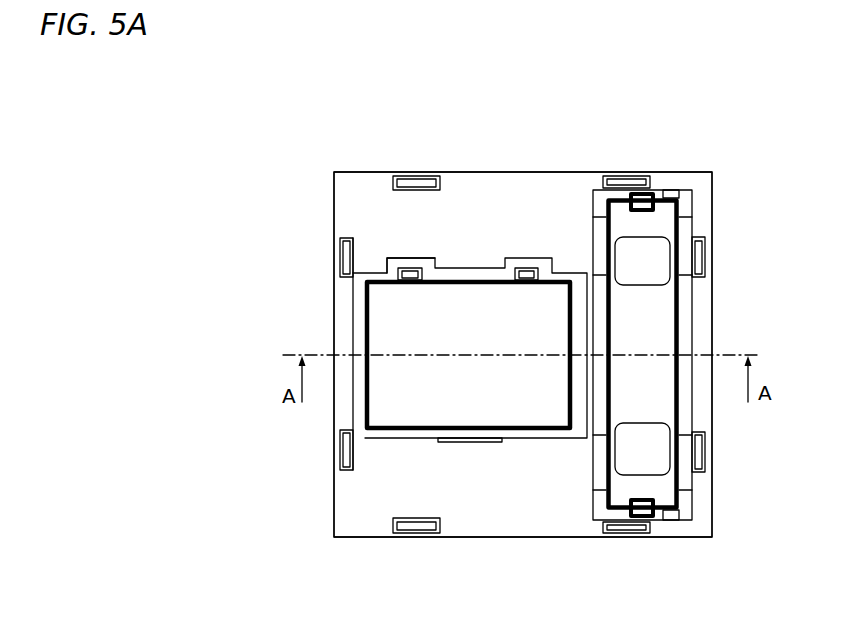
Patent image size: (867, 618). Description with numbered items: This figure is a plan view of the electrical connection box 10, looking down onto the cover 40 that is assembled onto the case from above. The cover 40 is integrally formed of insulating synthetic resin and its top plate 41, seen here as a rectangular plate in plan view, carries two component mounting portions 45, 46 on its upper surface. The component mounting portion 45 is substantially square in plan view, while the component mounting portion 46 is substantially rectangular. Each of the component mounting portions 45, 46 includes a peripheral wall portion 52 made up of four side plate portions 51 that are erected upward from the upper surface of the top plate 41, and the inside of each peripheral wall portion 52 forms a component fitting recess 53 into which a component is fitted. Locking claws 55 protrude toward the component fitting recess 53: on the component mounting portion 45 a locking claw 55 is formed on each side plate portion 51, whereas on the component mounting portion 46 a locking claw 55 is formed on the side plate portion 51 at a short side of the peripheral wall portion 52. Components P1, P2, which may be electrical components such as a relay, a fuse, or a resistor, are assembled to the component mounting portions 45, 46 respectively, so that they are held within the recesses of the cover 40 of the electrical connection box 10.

The electrical connection box 10 is at (307, 172).
The cover 40 is at (363, 172).
The top plate 41 is at (470, 185).
The component mounting portion 45 is at (350, 305).
The component mounting portion 46 is at (692, 312).
The side plate portion 51 is at (480, 266).
The peripheral wall portion 52 is at (367, 438).
The component fitting recess 53 is at (383, 270).
The locking claw 55 is at (640, 212).
The component P1 is at (392, 395).
The component P2 is at (645, 408).